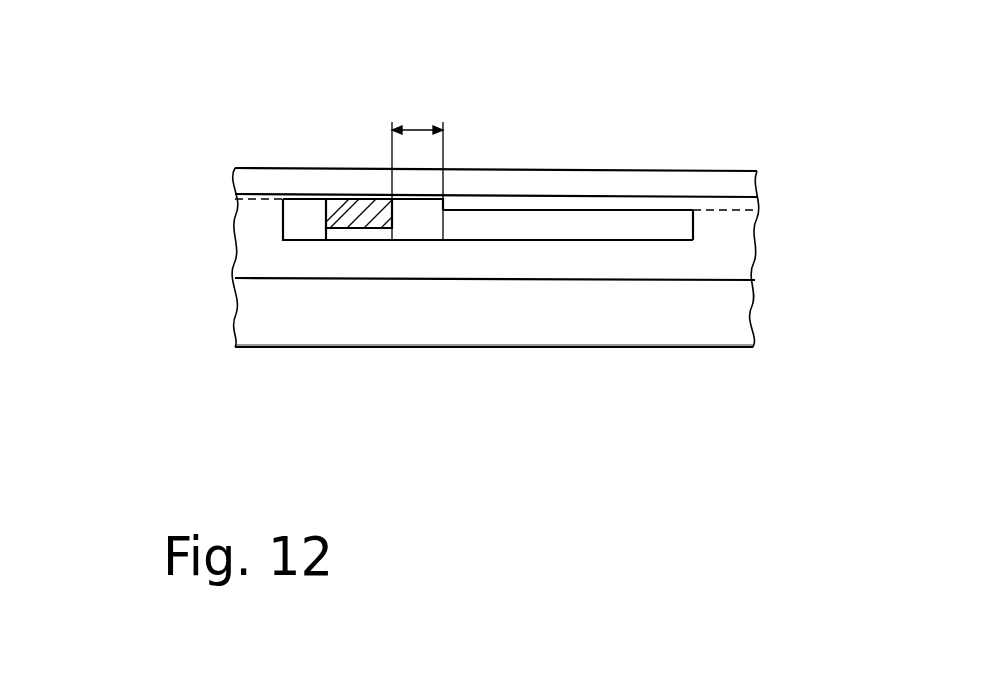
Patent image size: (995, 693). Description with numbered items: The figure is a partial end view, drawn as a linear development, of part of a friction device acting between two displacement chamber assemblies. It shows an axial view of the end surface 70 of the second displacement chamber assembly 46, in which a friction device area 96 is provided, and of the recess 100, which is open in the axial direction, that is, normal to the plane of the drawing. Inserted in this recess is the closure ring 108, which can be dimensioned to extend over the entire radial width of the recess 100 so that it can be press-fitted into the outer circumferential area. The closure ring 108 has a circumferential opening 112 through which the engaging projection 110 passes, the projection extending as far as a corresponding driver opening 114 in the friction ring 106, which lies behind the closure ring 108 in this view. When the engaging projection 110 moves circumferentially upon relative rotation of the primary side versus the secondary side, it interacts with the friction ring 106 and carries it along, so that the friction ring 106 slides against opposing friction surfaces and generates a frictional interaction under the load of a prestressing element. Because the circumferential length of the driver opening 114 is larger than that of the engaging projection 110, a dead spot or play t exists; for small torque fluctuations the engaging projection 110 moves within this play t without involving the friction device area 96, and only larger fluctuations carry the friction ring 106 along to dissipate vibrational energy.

The friction device area 96 is at (183, 170).
The closure ring 108 is at (735, 252).
The recess 100 is at (355, 278).
The lateral surface 70 is at (727, 323).
The second displacement chamber assembly 46 is at (623, 348).
The driver opening 114 is at (441, 202).
The friction ring 106 is at (588, 220).
The circumferential opening 112 is at (692, 231).
The engaging projection 110 is at (358, 212).
The play t is at (415, 128).